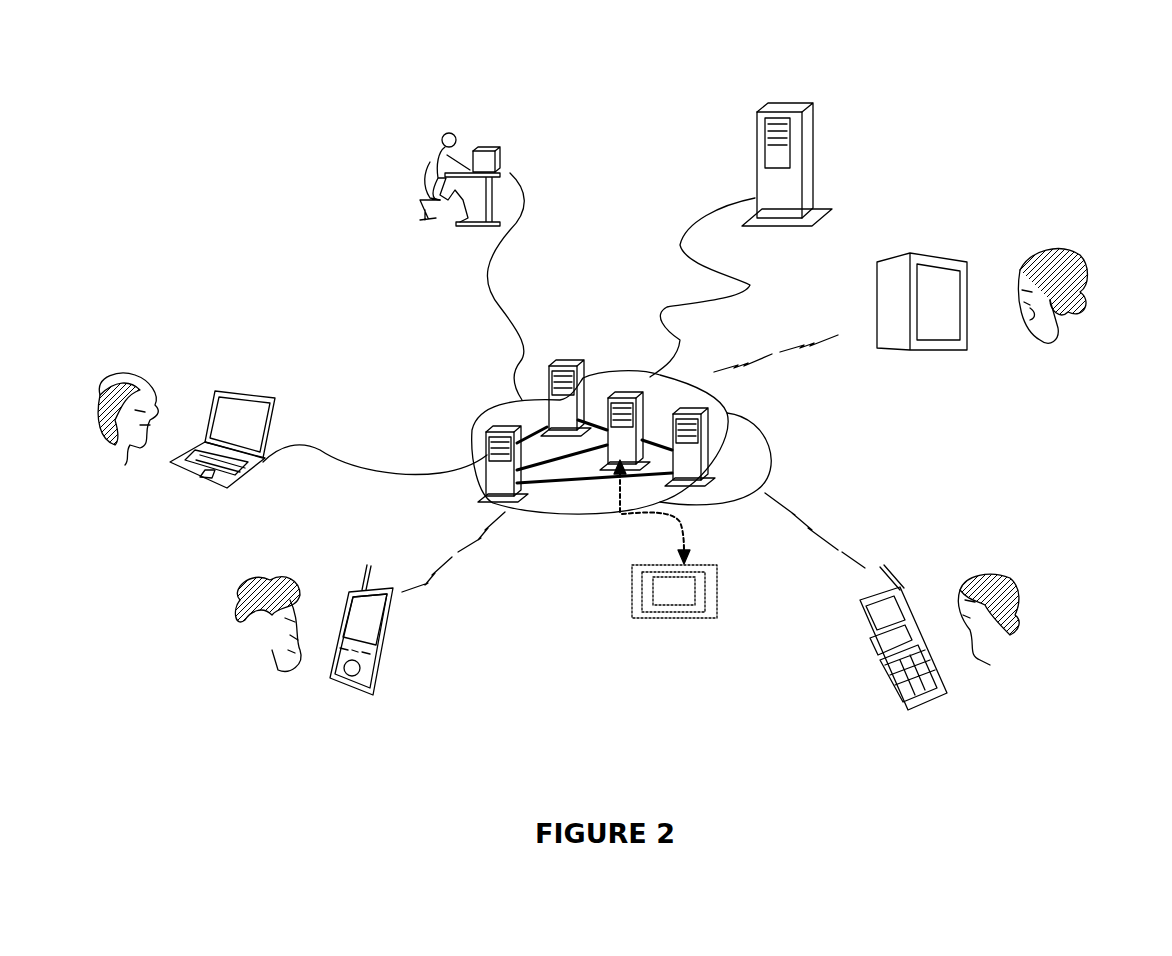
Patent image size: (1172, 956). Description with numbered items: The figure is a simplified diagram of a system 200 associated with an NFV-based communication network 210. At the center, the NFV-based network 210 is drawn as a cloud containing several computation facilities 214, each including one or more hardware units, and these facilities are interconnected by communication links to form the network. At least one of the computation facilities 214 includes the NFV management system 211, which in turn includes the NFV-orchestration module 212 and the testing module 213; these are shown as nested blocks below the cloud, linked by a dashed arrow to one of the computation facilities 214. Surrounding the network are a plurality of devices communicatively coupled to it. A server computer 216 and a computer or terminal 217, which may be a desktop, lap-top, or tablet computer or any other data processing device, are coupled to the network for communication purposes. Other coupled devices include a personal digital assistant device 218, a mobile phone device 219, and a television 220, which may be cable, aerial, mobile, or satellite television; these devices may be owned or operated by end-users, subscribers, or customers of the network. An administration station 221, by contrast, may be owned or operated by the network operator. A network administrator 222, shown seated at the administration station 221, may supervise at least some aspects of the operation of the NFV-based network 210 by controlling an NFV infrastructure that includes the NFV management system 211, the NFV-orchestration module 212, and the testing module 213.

The system 200 is at (1111, 102).
The NFV-based communication network 210 is at (649, 376).
The NFV management system 211 is at (632, 568).
The NFV-orchestration (NFV-O) module 212 is at (642, 589).
The testing module 213 is at (653, 604).
The computation facility 214 is at (560, 362).
The server computer 216 is at (810, 142).
The computer or terminal 217 is at (277, 400).
The personal digital assistant (PDA) device 218 is at (388, 640).
The mobile phone device 219 is at (893, 683).
The television 220 is at (875, 295).
The administration station 221 is at (495, 153).
The network administrator 222 is at (437, 150).